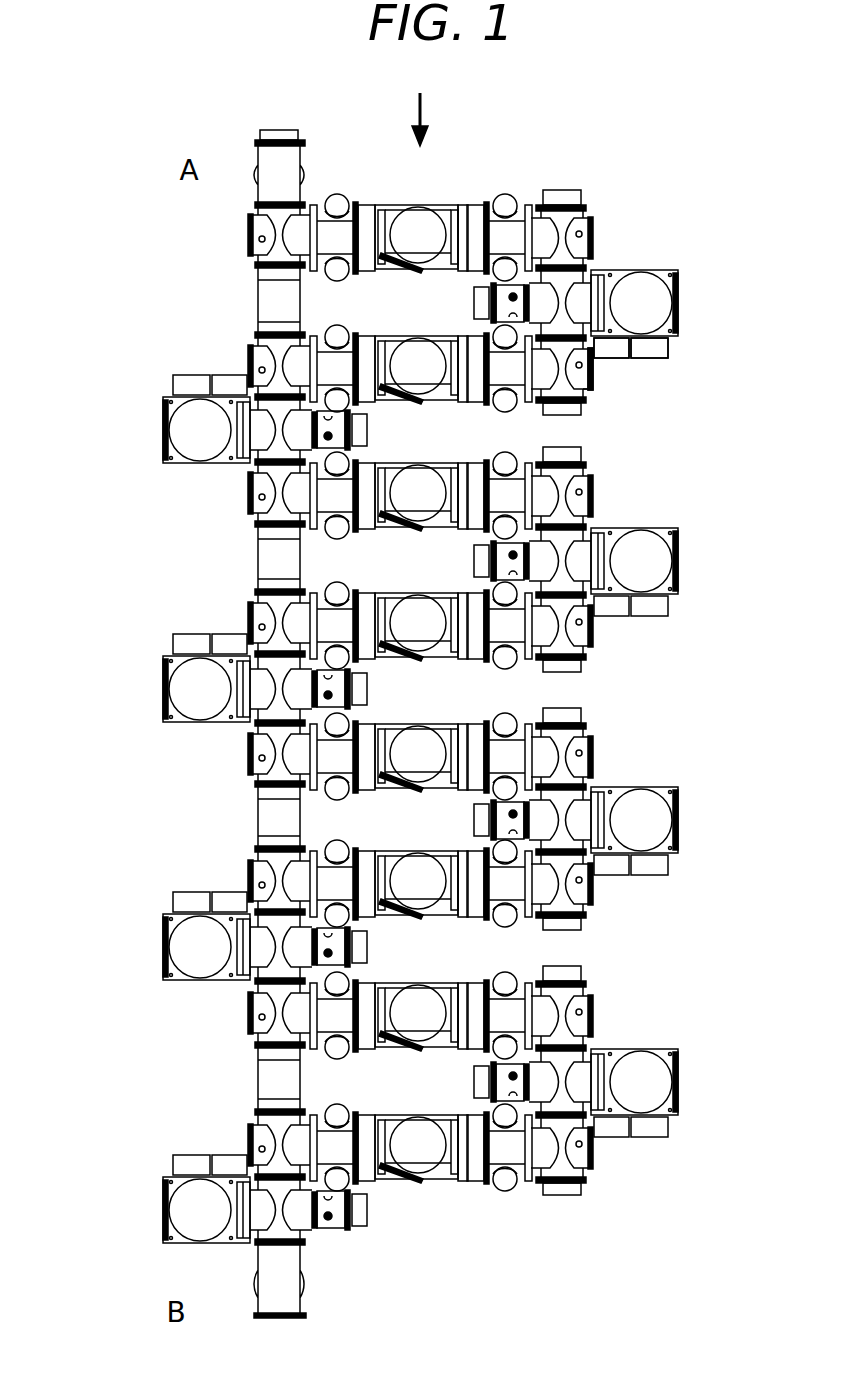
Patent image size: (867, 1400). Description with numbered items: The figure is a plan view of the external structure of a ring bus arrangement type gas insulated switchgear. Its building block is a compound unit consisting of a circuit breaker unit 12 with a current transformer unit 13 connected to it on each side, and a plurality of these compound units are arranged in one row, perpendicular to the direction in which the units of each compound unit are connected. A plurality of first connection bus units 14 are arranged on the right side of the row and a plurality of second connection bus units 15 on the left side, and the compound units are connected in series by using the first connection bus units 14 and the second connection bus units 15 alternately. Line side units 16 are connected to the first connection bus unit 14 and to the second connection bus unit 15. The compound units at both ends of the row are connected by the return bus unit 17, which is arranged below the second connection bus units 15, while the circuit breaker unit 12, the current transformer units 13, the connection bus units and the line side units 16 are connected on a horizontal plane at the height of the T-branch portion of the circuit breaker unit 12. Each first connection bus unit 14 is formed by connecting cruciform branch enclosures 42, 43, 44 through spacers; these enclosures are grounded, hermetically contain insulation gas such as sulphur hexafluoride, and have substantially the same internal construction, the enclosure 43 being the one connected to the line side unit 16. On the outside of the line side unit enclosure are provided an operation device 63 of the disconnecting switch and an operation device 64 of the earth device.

The circuit breaker unit 12 is at (438, 205).
The current transformer unit 13 is at (338, 192).
The first connection bus unit 14 is at (594, 248).
The second connection bus unit 15 is at (250, 240).
The line side unit 16 is at (678, 300).
The return bus unit 17 is at (258, 302).
The cruciform branch enclosure 42 is at (588, 208).
The cruciform branch enclosure 43 is at (594, 360).
The cruciform branch enclosure 44 is at (590, 382).
The operation device of the disconnecting switch 63 is at (620, 359).
The operation device of the earth device 64 is at (666, 348).